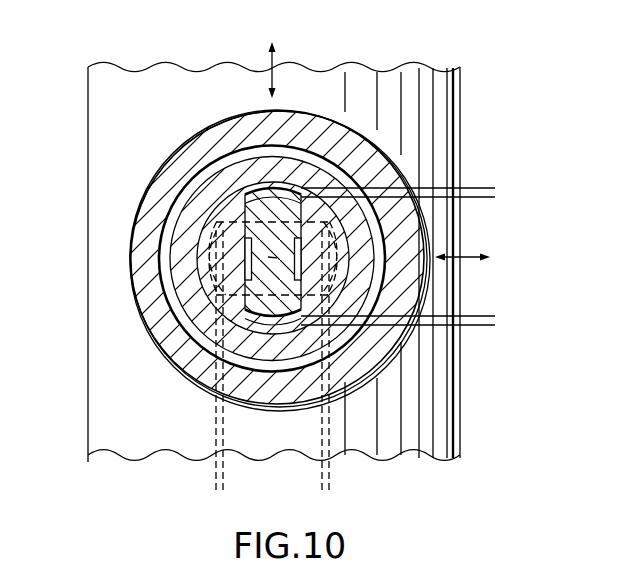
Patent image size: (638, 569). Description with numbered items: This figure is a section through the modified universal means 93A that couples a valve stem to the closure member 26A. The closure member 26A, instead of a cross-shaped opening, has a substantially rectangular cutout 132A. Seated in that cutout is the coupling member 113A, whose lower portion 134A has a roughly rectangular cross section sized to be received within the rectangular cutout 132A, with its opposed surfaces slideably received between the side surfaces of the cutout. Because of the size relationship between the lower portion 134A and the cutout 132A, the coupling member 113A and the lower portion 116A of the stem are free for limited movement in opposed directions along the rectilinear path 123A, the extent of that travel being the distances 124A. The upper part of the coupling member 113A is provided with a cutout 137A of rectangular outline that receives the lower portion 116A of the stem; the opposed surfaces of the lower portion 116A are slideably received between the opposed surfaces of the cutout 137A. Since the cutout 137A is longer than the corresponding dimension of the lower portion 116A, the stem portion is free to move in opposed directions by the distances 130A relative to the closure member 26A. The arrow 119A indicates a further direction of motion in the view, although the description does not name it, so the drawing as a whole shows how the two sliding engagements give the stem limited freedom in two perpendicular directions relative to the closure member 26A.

The closure member 26A is at (167, 291).
The universal means 93A is at (305, 172).
The coupling member 113A is at (197, 226).
The lower portion of stem 116A is at (168, 361).
The direction of vertical adjustment 119A is at (282, 63).
The rectilinear path 123A is at (466, 254).
The distances 124A is at (337, 482).
The distances 130A is at (482, 205).
The rectangular cutout 132A is at (301, 261).
The lower portion of coupling member 134A is at (245, 255).
The cutout 137A is at (243, 189).